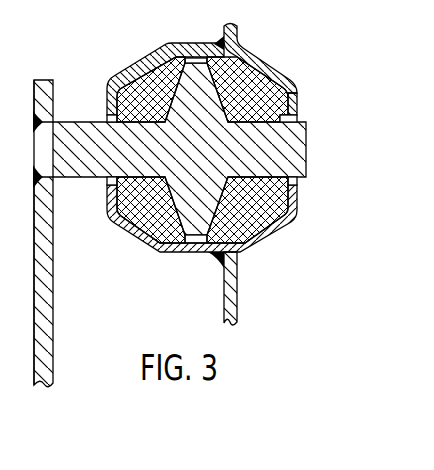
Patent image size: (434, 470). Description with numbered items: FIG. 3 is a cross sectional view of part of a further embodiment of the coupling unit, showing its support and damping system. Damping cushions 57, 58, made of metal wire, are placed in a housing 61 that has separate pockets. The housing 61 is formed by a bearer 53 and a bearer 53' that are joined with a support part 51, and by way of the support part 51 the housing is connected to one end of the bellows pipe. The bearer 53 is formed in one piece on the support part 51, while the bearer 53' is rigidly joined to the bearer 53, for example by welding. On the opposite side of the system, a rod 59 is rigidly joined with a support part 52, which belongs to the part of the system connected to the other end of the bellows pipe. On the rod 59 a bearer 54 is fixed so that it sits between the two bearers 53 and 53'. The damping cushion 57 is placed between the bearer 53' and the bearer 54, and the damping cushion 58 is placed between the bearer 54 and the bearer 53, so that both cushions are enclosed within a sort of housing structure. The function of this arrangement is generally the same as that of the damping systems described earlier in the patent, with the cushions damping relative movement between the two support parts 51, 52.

The support part 51 is at (232, 287).
The support part 52 is at (43, 278).
The bearer 53 is at (309, 104).
The bearer 53' is at (144, 79).
The bearer 54 is at (193, 192).
The damping cushion 57 is at (144, 88).
The damping cushion 58 is at (248, 77).
The rod 59 is at (78, 165).
The housing 61 is at (294, 52).